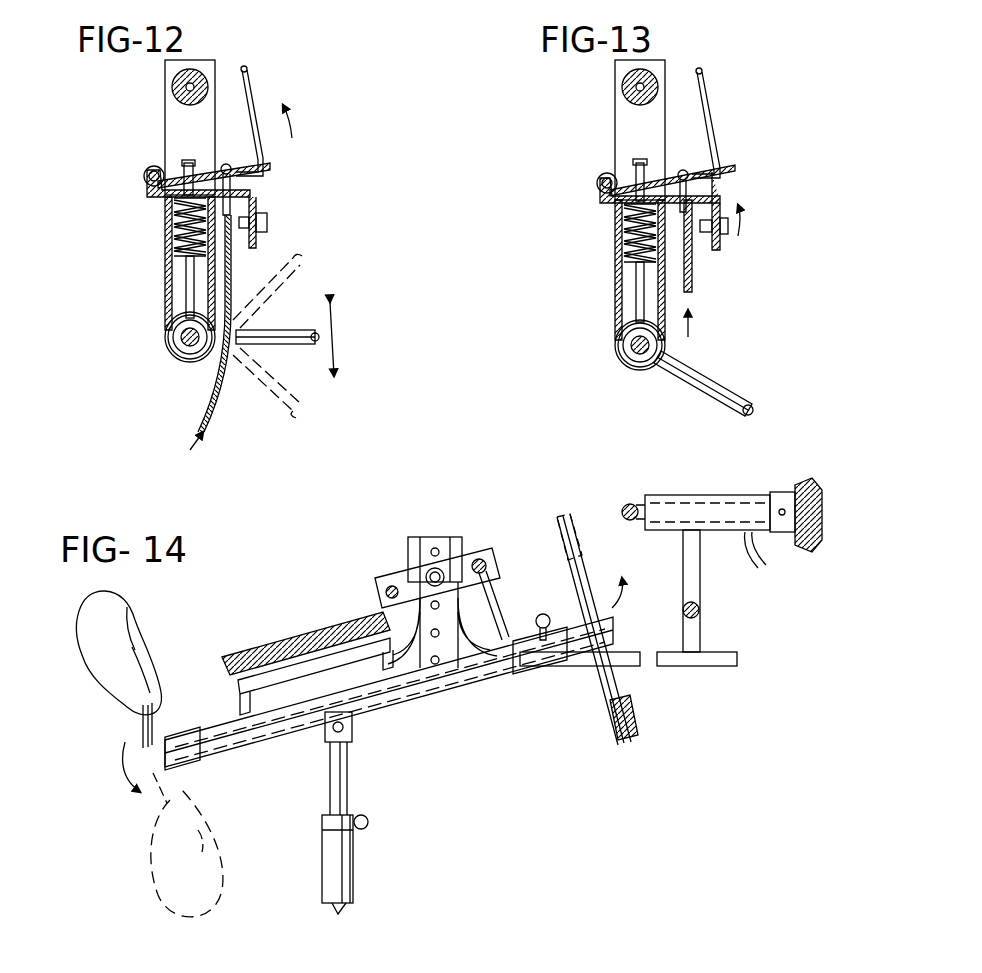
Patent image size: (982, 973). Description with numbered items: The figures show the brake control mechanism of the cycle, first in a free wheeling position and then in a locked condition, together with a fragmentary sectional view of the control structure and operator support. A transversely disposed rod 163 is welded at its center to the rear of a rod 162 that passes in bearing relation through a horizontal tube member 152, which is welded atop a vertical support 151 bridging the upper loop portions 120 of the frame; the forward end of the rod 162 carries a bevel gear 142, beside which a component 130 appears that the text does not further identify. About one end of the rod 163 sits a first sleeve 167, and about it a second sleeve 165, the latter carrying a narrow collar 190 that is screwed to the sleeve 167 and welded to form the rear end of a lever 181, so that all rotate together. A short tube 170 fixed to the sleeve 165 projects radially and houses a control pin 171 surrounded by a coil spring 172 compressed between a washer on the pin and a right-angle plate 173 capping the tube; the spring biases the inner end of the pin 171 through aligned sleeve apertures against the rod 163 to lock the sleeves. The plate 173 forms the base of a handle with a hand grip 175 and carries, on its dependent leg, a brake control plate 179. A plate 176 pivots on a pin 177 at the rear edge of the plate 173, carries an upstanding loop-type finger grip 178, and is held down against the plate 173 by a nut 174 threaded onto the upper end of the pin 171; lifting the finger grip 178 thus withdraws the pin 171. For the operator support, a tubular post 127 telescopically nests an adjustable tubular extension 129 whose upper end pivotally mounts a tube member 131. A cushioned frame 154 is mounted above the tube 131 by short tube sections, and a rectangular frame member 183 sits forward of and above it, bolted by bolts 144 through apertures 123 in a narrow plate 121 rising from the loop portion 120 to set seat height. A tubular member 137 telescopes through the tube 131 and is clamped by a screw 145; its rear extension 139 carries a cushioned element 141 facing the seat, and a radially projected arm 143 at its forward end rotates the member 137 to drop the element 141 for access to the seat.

In FIG. 14, the upper loop portion 120 is at (680, 664).
In FIG. 14, the narrow plate 121 is at (432, 537).
In FIG. 14, the apertures 123 is at (438, 548).
In FIG. 14, the tubular post 127 is at (322, 853).
In FIG. 14, the adjustable tubular extension 129 is at (330, 778).
In FIG. 14, the hook 130 is at (765, 562).
In FIG. 14, the tube member 131 is at (415, 690).
In FIG. 14, the tubular member 137 is at (180, 760).
In FIG. 12, the upwardly directed extension 139 is at (205, 400).
In FIG. 13, the upwardly directed extension 139 is at (692, 285).
In FIG. 14, the upwardly directed extension 139 is at (140, 718).
In FIG. 14, the cushioned element 141 is at (128, 610).
In FIG. 14, the bevel gear 142 is at (812, 480).
In FIG. 14, the radially projected arm 143 is at (616, 732).
In FIG. 14, the bolts 144 is at (428, 572).
In FIG. 14, the screw 145 is at (541, 614).
In FIG. 14, the vertical support 151 is at (700, 585).
In FIG. 14, the horizontal tube member 152 is at (720, 495).
In FIG. 14, the cushioned frame 154 is at (308, 633).
In FIG. 14, the rod 162 is at (642, 495).
In FIG. 12, the transversely disposed rod 163 is at (186, 345).
In FIG. 13, the transversely disposed rod 163 is at (638, 352).
In FIG. 14, the transversely disposed rod 163 is at (625, 505).
In FIG. 12, the second sleeve 165 is at (172, 338).
In FIG. 13, the second sleeve 165 is at (622, 345).
In FIG. 12, the first sleeve 167 is at (172, 328).
In FIG. 13, the first sleeve 167 is at (622, 335).
In FIG. 12, the short tube 170 is at (165, 243).
In FIG. 13, the short tube 170 is at (615, 290).
In FIG. 12, the control pin 171 is at (186, 276).
In FIG. 13, the control pin 171 is at (636, 276).
In FIG. 12, the coil spring 172 is at (175, 223).
In FIG. 13, the coil spring 172 is at (625, 240).
In FIG. 12, the plate 173 is at (260, 188).
In FIG. 13, the plate 173 is at (612, 198).
In FIG. 12, the nut 174 is at (186, 163).
In FIG. 13, the nut 174 is at (636, 163).
In FIG. 12, the hand grip 175 is at (172, 87).
In FIG. 13, the hand grip 175 is at (622, 87).
In FIG. 12, the plate 176 is at (228, 164).
In FIG. 13, the plate 176 is at (712, 170).
In FIG. 12, the pin 177 is at (145, 172).
In FIG. 13, the pin 177 is at (600, 175).
In FIG. 12, the loop-type finger grip 178 is at (253, 78).
In FIG. 13, the loop-type finger grip 178 is at (708, 80).
In FIG. 13, the brake control plate 179 is at (722, 183).
In FIG. 12, the lever 181 is at (265, 330).
In FIG. 13, the lever 181 is at (715, 378).
In FIG. 14, the rectangular frame member 183 is at (478, 550).
In FIG. 12, the narrow collar 190 is at (170, 358).
In FIG. 13, the narrow collar 190 is at (620, 360).